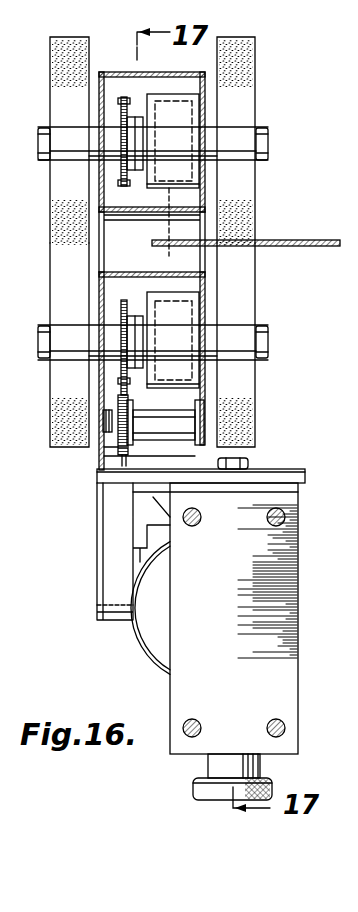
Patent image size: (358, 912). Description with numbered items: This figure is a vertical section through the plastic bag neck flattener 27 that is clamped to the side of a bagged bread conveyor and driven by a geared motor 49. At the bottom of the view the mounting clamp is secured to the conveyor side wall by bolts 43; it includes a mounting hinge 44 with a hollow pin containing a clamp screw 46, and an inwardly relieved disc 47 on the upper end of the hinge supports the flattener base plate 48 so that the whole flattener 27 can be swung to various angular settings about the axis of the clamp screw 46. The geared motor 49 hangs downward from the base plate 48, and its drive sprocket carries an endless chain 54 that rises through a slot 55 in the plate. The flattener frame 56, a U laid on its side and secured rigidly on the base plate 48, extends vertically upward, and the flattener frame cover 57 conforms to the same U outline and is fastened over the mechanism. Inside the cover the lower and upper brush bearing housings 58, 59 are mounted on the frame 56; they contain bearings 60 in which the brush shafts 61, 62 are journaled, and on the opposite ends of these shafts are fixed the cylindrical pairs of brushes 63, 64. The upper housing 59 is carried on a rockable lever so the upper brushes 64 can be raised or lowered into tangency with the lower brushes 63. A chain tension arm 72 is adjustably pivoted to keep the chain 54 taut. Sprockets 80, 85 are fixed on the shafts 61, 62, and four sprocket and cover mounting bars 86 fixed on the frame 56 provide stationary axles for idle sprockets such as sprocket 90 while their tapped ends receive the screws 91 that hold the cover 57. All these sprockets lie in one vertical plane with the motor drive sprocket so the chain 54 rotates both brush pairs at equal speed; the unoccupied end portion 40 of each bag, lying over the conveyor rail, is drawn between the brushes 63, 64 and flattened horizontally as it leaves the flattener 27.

The bag neck flattener 27 is at (285, 105).
The unoccupied end portion of bag 40 is at (276, 240).
The bolts 43 is at (267, 517).
The mounting hinge 44 is at (199, 759).
The clamp screw 46 is at (210, 772).
The inwardly relieved disc 47 is at (293, 484).
The flattener base plate 48 is at (268, 470).
The geared motor 49 is at (148, 632).
The endless chain 54 is at (124, 97).
The slot 55 is at (66, 533).
The flattener frame 56 is at (203, 82).
The flattener frame cover 57 is at (125, 73).
The lower brush bearing housing 58 is at (200, 302).
The upper brush bearing housing 59 is at (198, 172).
The bearings 60 is at (157, 300).
The brush shaft 61 is at (208, 335).
The brush shaft 62 is at (212, 140).
The brushes 63 is at (245, 272).
The brushes 64 is at (62, 88).
The chain tension arm 72 is at (10, 213).
The sprocket 80 is at (124, 300).
The sprocket 85 is at (120, 180).
The sprocket and cover mounting bars 86 is at (168, 425).
The idle sprocket 90 is at (115, 440).
The screws 91 is at (100, 433).